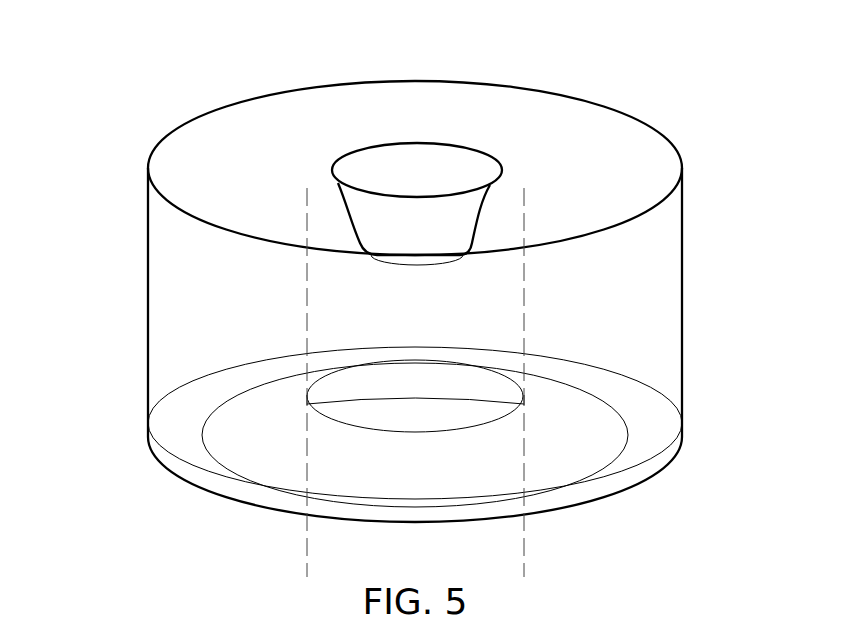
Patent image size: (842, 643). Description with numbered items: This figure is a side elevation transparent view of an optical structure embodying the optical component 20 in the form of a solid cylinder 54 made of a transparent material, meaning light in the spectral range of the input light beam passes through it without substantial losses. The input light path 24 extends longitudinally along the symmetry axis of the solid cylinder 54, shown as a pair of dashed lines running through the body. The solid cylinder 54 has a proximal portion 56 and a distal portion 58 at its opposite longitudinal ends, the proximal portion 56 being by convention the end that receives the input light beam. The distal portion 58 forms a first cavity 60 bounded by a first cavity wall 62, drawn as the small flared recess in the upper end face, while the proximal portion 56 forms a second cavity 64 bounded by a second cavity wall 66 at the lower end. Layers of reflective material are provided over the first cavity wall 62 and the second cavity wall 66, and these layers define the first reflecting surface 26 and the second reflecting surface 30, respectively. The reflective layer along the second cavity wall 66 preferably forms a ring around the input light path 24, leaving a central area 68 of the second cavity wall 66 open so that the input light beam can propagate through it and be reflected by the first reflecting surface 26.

The optical component 20 is at (720, 94).
The input light path 24 is at (523, 549).
The first reflecting surface 26 is at (353, 223).
The second reflecting surface 30 is at (257, 412).
The solid cylinder 54 is at (682, 287).
The proximal portion 56 is at (160, 408).
The distal portion 58 is at (148, 175).
The first cavity 60 is at (325, 117).
The first cavity wall 62 is at (337, 194).
The second cavity 64 is at (266, 537).
The second cavity wall 66 is at (238, 453).
The central area 68 is at (493, 383).